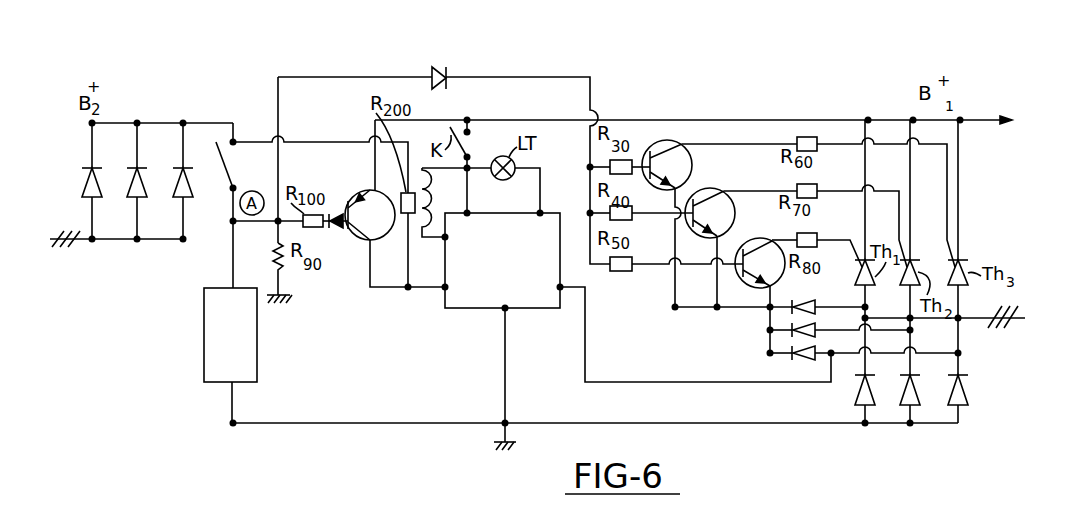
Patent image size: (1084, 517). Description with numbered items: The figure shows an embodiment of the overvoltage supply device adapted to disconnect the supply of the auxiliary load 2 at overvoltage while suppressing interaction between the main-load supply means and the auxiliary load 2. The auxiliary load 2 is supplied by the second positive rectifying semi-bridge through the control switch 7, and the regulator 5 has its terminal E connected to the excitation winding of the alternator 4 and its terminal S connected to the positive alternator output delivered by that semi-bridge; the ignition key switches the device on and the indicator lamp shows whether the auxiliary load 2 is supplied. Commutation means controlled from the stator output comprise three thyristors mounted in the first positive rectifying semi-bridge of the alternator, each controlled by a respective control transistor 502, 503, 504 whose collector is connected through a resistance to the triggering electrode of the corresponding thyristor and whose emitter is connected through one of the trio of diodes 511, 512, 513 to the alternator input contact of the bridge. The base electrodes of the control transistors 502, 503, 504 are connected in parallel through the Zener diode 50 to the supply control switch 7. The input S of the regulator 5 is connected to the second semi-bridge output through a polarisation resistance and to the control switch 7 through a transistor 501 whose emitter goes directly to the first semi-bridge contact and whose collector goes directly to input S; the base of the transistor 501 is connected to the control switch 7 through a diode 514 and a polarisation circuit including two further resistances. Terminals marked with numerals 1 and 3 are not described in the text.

The ground terminal 1 is at (964, 247).
The auxiliary load 2 is at (258, 333).
The battery output terminal 3 is at (1040, 106).
The excitation winding of the alternator 4 is at (435, 190).
The regulator 5 is at (455, 309).
The control switch 7 is at (229, 176).
The Zener diode 50 is at (448, 74).
The transistor 501 is at (369, 241).
The control transistor 502 is at (676, 127).
The control transistor 503 is at (699, 189).
The control transistor 504 is at (742, 246).
The diode 511 is at (800, 301).
The diode 512 is at (806, 330).
The diode 513 is at (790, 360).
The diode 514 is at (357, 198).